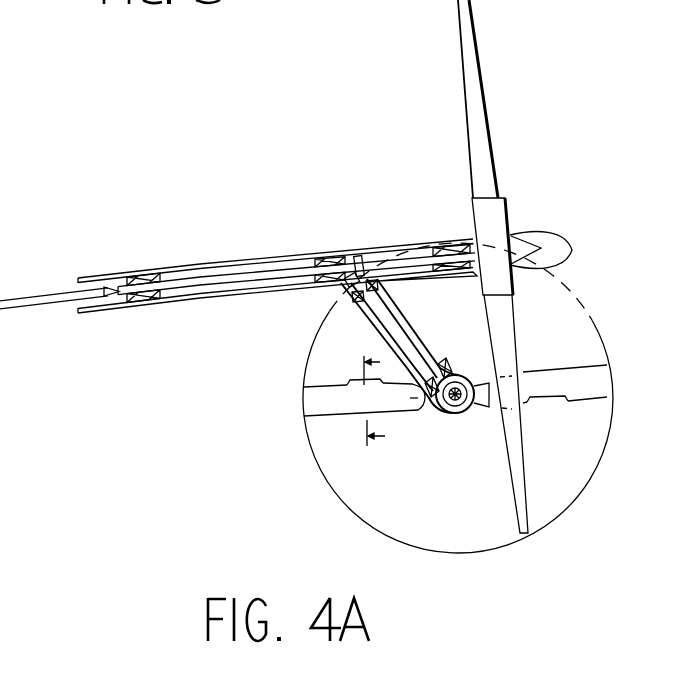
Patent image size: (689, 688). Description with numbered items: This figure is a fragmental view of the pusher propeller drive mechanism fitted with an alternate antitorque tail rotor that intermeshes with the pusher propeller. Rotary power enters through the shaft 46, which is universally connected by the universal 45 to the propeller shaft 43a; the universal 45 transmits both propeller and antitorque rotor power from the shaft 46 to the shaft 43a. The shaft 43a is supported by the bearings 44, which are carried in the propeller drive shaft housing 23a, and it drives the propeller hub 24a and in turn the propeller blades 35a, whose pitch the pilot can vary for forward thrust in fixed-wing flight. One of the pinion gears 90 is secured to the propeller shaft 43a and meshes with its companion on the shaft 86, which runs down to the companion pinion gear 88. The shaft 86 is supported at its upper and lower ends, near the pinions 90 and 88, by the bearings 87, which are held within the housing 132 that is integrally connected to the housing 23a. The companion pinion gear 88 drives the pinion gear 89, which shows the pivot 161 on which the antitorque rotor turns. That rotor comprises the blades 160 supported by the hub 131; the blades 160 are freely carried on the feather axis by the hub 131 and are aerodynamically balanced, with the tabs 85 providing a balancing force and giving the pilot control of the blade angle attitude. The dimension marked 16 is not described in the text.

The propeller blades 35a is at (485, 108).
The propeller hub 24a is at (534, 240).
The propeller drive shaft housing 23a is at (230, 263).
The propeller shaft 43a is at (236, 284).
The universal 45 is at (115, 288).
The shaft 46 is at (44, 304).
The bearings 44 is at (335, 262).
The pinion gears 90 is at (359, 257).
The shaft 86 is at (380, 337).
The housing 132 is at (408, 297).
The bearings 87 is at (342, 294).
The companion pinion gear 88 is at (438, 418).
The pinion gear 89 is at (468, 407).
The pivot 161 is at (458, 418).
The antitorque rotor blades 160 is at (318, 398).
The tabs 85 is at (357, 385).
The dimension 16 is at (380, 370).
The hub 131 is at (377, 438).